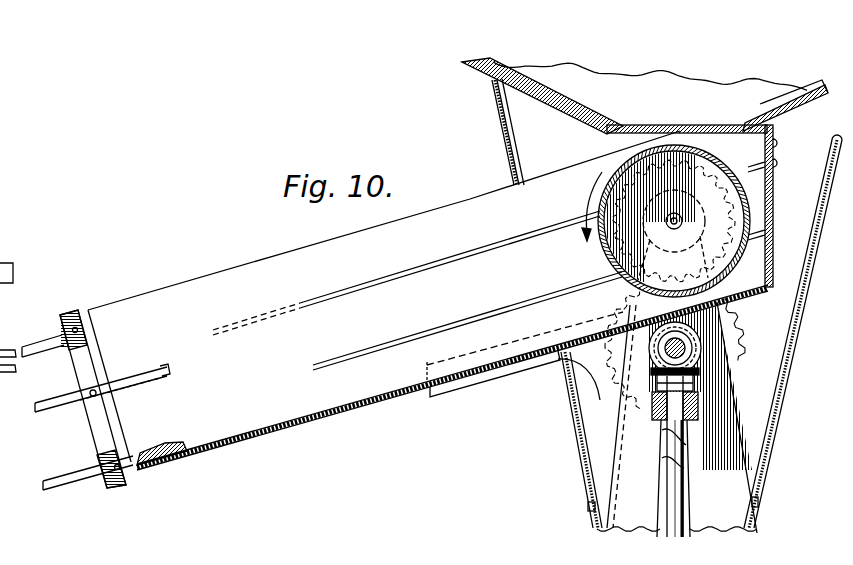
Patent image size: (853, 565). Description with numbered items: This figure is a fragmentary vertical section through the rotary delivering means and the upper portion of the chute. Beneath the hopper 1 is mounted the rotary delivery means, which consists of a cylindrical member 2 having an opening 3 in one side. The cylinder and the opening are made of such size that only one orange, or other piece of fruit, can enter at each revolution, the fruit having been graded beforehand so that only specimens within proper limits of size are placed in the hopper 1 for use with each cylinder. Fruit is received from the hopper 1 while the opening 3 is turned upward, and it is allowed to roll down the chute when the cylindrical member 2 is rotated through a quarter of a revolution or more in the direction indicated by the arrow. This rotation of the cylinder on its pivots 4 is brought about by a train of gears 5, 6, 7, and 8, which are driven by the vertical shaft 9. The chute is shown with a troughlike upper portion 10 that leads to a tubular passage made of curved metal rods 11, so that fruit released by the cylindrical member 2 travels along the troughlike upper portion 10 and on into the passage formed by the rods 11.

The hopper 1 is at (613, 73).
The cylindrical member 2 is at (600, 254).
The opening 3 is at (627, 163).
The pivots 4 is at (690, 232).
The gear 5 is at (752, 199).
The gear 6 is at (739, 323).
The gear 7 is at (697, 347).
The gear 8 is at (702, 373).
The vertical shaft 9 is at (672, 490).
The troughlike upper portion 10 is at (230, 280).
The curved metal rods 11 is at (68, 397).